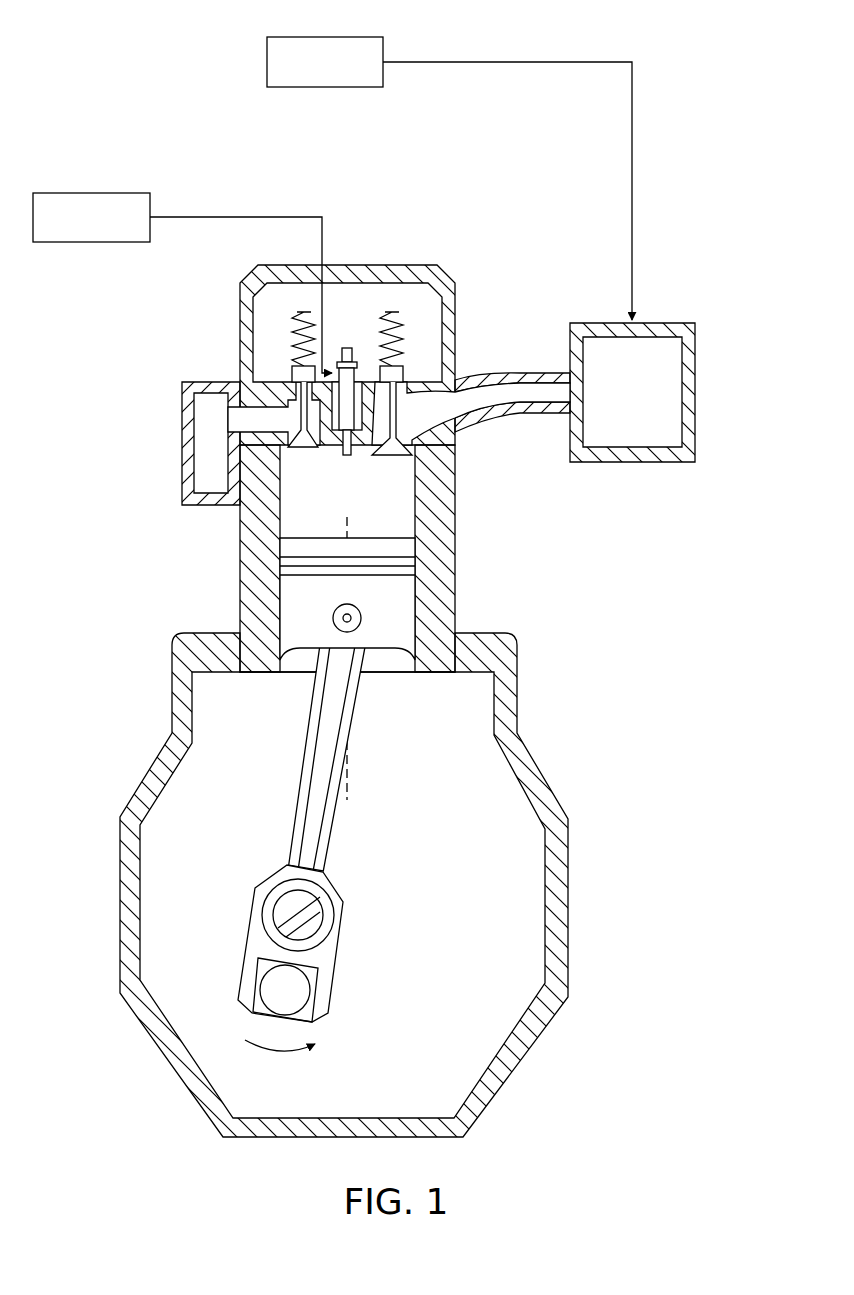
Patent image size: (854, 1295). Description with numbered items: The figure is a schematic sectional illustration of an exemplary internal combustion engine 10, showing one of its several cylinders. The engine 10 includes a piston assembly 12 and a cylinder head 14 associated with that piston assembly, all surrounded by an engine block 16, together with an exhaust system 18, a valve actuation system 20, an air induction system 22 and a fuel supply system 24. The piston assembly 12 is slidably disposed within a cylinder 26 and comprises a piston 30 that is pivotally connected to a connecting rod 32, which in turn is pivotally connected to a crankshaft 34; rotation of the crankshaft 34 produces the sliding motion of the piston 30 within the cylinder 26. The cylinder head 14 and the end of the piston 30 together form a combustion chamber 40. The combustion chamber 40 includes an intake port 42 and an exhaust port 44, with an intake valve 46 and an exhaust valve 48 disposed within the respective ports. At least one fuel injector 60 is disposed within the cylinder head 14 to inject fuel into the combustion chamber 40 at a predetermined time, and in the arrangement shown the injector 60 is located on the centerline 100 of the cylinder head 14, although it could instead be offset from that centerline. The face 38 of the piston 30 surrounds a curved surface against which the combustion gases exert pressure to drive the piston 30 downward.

The internal combustion engine 10 is at (388, 587).
The piston assembly 12 is at (388, 690).
The cylinder head 14 is at (455, 432).
The engine block 16 is at (172, 700).
The exhaust system 18 is at (155, 428).
The valve actuation system 20 is at (346, 340).
The air induction system 22 is at (675, 200).
The fuel supply system 24 is at (250, 193).
The cylinder 26 is at (415, 508).
The piston 30 is at (402, 550).
The connecting rod 32 is at (312, 828).
The crankshaft 34 is at (293, 992).
The face of piston 38 is at (361, 530).
The combustion chamber 40 is at (290, 508).
The intake port 42 is at (402, 417).
The exhaust port 44 is at (295, 417).
The intake valve 46 is at (393, 455).
The exhaust valve 48 is at (302, 447).
The fuel injector 60 is at (346, 362).
The centerline 100 is at (349, 783).